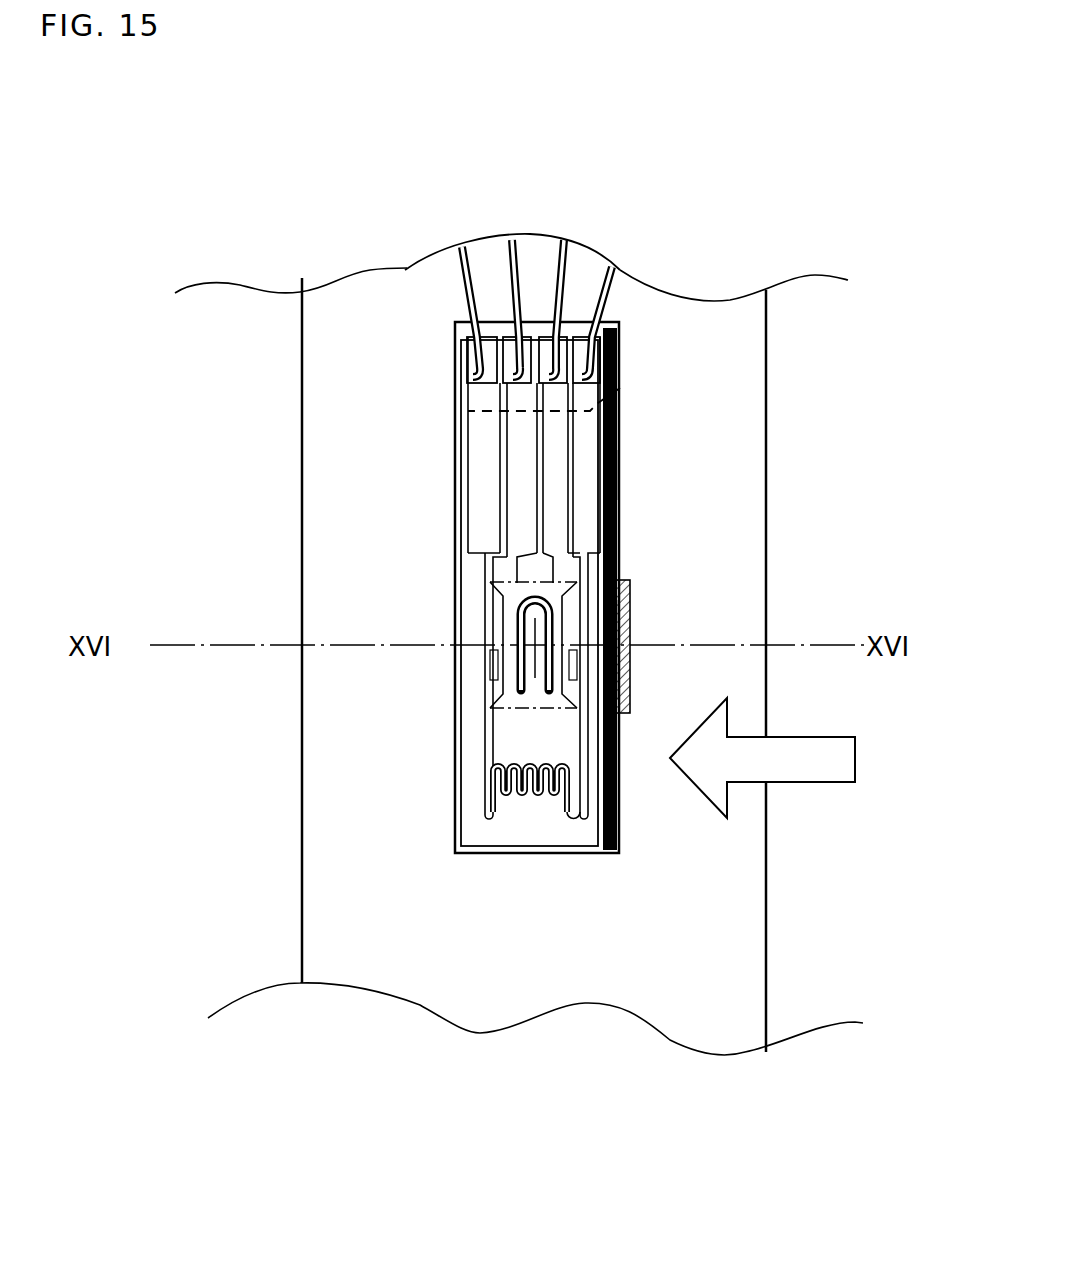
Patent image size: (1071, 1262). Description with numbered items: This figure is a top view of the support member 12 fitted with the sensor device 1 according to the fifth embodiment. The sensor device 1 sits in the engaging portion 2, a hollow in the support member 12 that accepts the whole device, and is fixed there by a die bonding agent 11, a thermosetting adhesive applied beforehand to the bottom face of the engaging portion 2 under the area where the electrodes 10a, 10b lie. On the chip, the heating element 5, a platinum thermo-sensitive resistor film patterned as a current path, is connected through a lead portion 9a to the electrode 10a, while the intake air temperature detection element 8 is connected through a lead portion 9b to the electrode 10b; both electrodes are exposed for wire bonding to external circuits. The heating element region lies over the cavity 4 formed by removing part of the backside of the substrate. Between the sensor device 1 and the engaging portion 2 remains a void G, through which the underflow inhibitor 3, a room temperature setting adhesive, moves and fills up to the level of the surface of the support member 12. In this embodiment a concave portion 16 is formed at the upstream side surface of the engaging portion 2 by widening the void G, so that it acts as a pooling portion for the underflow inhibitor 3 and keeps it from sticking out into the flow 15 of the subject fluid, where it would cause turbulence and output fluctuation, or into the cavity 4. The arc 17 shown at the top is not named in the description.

The sensor device 1 is at (478, 830).
The engaging portion 2 is at (567, 858).
The underflow inhibitor 3 is at (620, 477).
The cavity 4 is at (493, 612).
The heating element 5 is at (510, 684).
The intake air temperature detection element 8 is at (493, 752).
The lead portion 9a is at (513, 435).
The lead portion 9b is at (483, 470).
The electrode 10a is at (572, 320).
The electrode 10b is at (620, 363).
The die bonding agent 11 is at (620, 388).
The support member 12 is at (690, 937).
The flow 15 is at (797, 770).
The concave portion 16 is at (628, 590).
The seal 17 is at (460, 280).
The void G is at (627, 683).